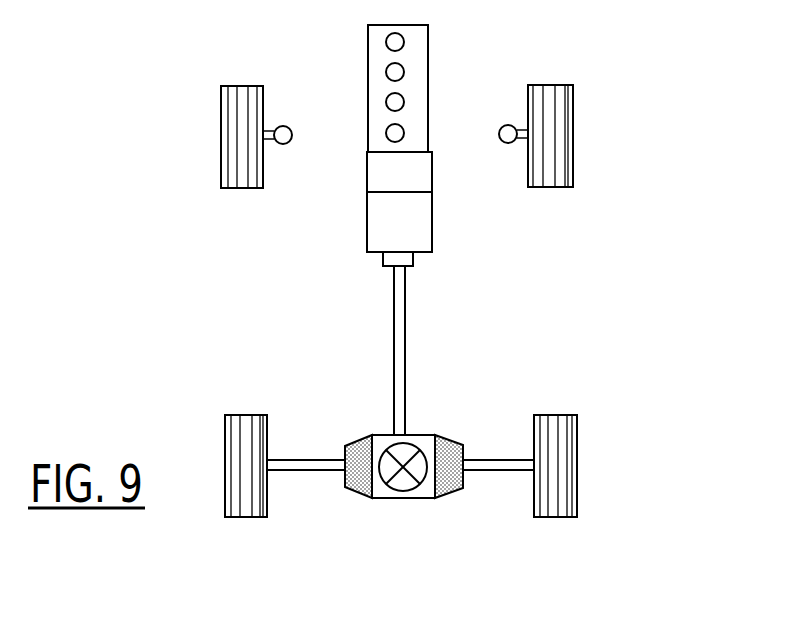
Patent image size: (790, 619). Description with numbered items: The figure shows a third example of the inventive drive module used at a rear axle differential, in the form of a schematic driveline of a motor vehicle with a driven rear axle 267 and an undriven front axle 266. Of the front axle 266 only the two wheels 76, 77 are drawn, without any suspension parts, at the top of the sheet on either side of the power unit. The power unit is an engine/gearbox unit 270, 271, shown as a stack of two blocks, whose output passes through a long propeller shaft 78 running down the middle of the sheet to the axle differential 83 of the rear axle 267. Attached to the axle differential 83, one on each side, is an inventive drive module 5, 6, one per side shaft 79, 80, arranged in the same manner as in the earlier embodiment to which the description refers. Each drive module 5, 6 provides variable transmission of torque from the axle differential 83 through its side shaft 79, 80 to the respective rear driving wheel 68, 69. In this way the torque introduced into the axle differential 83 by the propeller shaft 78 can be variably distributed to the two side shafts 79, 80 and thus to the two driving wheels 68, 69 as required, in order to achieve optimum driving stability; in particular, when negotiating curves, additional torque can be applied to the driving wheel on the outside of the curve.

The drive module 5 is at (357, 455).
The drive module 6 is at (449, 440).
The rear driving wheel 68 is at (245, 420).
The rear driving wheel 69 is at (557, 420).
The wheel 76 is at (236, 117).
The wheel 77 is at (560, 82).
The propeller shaft 78 is at (405, 326).
The side shaft 79 is at (294, 472).
The side shaft 80 is at (498, 472).
The axle differential 83 is at (403, 494).
The front axle 266 is at (592, 134).
The rear axle 267 is at (595, 465).
The engine 270 is at (428, 86).
The gearbox 271 is at (447, 218).